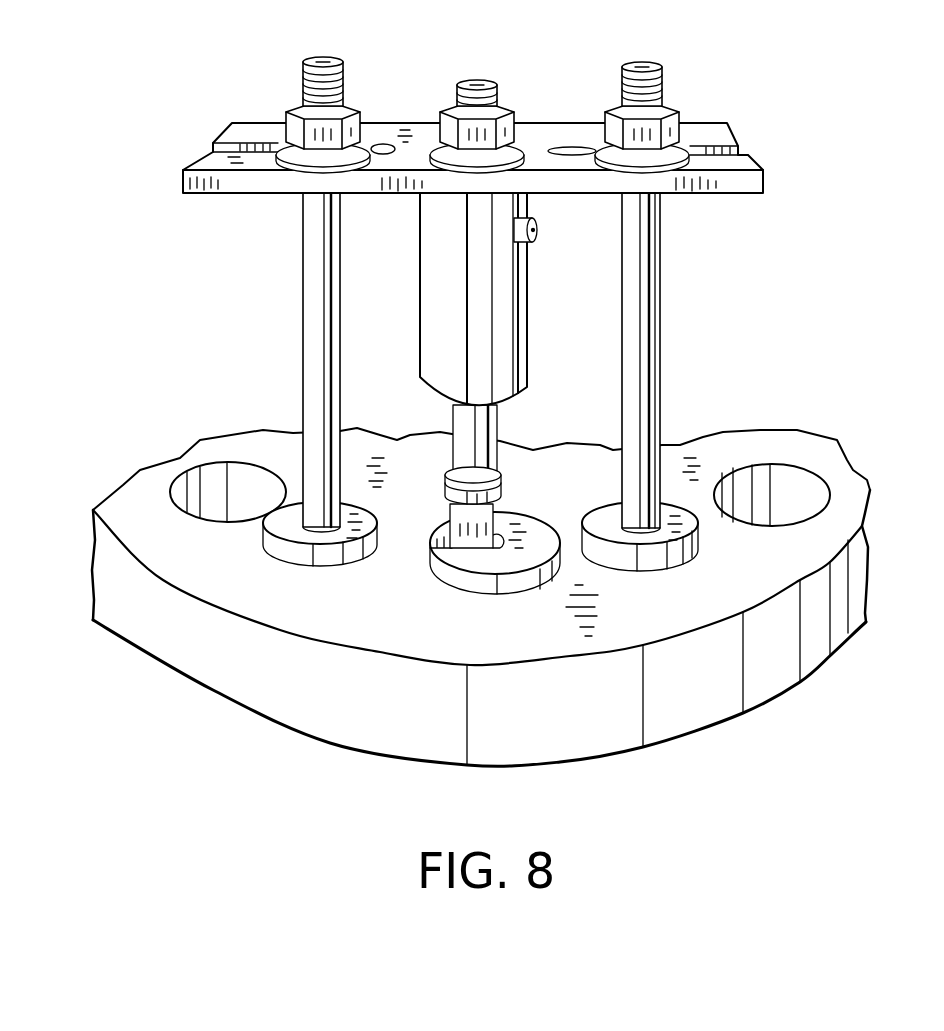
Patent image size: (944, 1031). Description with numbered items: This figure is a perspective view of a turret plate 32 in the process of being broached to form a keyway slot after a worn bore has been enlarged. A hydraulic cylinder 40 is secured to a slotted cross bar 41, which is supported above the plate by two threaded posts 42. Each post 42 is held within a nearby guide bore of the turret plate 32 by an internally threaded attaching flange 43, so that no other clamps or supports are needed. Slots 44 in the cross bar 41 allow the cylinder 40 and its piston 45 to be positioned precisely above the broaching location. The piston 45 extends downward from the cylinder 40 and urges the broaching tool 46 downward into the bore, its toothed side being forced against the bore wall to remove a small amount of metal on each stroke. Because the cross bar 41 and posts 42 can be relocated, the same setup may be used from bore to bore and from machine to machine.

The base plate 32 is at (817, 655).
The hydraulic cylinder 40 is at (512, 300).
The slotted cross bar 41 is at (530, 127).
The threaded posts 42 is at (313, 255).
The internally threaded attaching flanges 43 is at (275, 528).
The slots 44 is at (432, 522).
The piston 45 is at (488, 423).
The broaching tool 46 is at (500, 508).